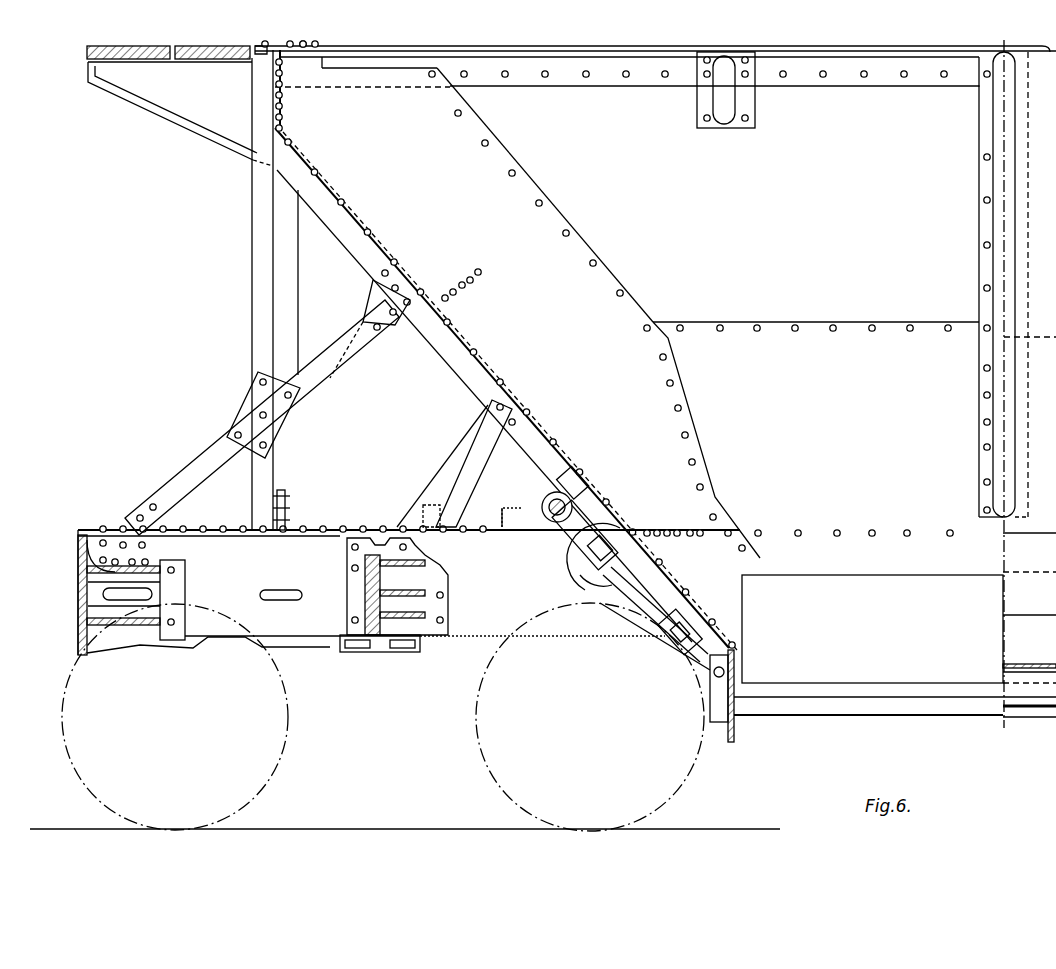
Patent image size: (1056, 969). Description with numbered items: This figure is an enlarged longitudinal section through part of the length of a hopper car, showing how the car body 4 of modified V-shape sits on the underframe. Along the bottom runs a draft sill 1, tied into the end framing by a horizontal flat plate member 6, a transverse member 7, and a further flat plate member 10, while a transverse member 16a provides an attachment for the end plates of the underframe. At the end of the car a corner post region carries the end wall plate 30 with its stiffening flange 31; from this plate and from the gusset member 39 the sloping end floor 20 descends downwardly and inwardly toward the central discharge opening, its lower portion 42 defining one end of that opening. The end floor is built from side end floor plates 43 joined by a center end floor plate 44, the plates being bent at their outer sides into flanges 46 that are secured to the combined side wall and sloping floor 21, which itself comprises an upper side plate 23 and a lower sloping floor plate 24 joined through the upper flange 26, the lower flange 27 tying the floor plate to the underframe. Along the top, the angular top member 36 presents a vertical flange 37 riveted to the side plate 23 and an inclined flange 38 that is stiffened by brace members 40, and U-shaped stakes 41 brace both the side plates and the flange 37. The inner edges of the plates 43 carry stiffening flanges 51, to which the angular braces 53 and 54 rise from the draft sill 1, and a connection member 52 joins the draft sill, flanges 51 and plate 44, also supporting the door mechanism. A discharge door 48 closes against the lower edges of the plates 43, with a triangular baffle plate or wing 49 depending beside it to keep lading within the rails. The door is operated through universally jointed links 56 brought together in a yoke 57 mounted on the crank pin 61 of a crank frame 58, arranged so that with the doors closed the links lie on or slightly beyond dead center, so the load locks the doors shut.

The draft sill 1 is at (409, 592).
The car body 4 is at (778, 129).
The member 6 is at (367, 528).
The member 7 is at (283, 500).
The member 10 is at (210, 527).
The transverse member 16a is at (506, 512).
The sloping end floor 20 is at (368, 108).
The combined side wall and sloping floor 21 is at (660, 128).
The upper side plate 23 is at (818, 125).
The lower or sloping floor plate 24 is at (803, 440).
The upper flange 26 is at (822, 325).
The lower flange 27 is at (917, 557).
The plate 30 is at (272, 48).
The stiffening flange 31 is at (262, 45).
The top member 36 is at (458, 62).
The vertically disposed flange 37 is at (535, 65).
The flange 38 is at (627, 48).
The gusset member 39 is at (310, 43).
The brace member 40 is at (742, 86).
The stake 41 is at (985, 110).
The lower portion of the sloping end floor 42 is at (740, 660).
The side end floor plate 43 is at (499, 345).
The center end floor plate 44 is at (388, 300).
The flange 46 is at (640, 306).
The door 48 is at (872, 629).
The baffle plate or wing 49 is at (736, 733).
The stiffening flange 51 is at (458, 355).
The connection member 52 is at (585, 568).
The member 53 is at (175, 498).
The member 54 is at (470, 452).
The universally jointed link 56 is at (640, 583).
The yoke 57 is at (548, 518).
The crank frame 58 is at (575, 550).
The crank pin 61 is at (568, 470).